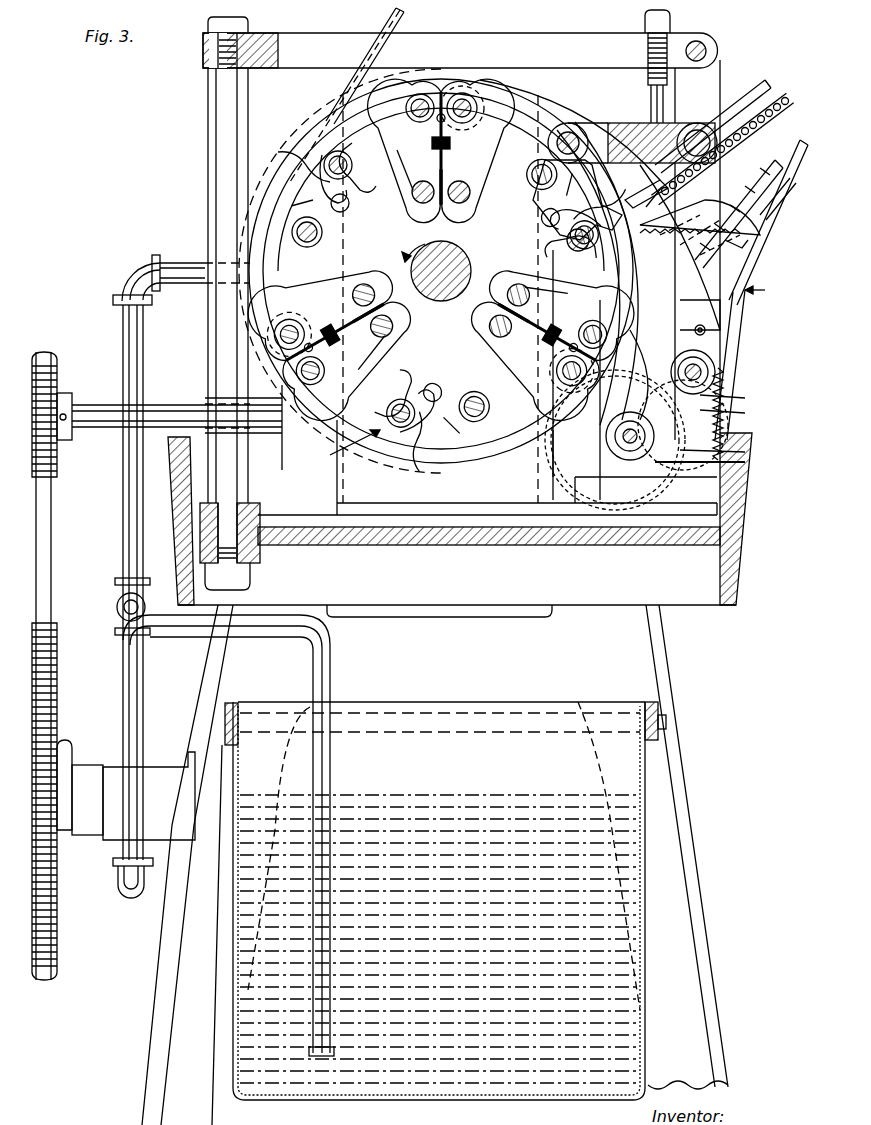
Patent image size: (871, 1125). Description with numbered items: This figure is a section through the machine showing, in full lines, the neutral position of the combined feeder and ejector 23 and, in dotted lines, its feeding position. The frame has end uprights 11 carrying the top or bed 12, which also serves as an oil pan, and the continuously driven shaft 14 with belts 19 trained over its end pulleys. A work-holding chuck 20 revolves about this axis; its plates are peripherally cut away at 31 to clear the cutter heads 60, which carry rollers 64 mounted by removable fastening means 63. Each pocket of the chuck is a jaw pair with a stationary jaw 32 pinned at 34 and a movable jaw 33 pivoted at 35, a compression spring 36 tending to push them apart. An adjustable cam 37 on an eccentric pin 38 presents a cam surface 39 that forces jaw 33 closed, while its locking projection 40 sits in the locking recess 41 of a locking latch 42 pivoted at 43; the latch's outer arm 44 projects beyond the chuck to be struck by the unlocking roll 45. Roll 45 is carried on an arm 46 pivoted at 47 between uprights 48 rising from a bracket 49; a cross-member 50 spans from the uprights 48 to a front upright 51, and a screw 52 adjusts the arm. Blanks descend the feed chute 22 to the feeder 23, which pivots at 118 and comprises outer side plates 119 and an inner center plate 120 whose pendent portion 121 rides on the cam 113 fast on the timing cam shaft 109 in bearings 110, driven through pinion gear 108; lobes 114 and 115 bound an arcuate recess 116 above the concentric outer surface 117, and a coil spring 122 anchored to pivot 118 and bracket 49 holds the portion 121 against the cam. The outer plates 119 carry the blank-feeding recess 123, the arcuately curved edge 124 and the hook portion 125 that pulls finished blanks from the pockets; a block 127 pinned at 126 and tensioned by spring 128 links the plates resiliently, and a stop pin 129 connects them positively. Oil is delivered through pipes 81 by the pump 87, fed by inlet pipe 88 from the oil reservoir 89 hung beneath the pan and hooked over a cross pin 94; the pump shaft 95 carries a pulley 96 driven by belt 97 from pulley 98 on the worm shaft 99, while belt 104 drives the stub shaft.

The end uprights 11 is at (165, 991).
The top or bed 12 is at (738, 552).
The shaft 14 is at (450, 255).
The belts 19 is at (335, 96).
The work-holding chuck 20 is at (436, 286).
The magazine or feed chute 22 is at (770, 118).
The combined feeder and ejector 23 is at (751, 360).
The peripheral cut-away 31 is at (534, 110).
The stationary jaw 32 is at (548, 118).
The movable jaw 33 is at (400, 124).
The pin 34 is at (478, 192).
The pivot 35 is at (416, 200).
The compression spring 36 is at (452, 162).
The adjustable cam 37 is at (365, 182).
The eccentric pin 38 is at (346, 162).
The cam surface 39 is at (390, 166).
The locking projection 40 is at (324, 158).
The locking recess 41 is at (345, 208).
The locking latch 42 is at (292, 206).
The pivot 43 is at (292, 236).
The outer arm 44 is at (288, 153).
The unlocking roll 45 is at (574, 132).
The arm 46 is at (632, 124).
The pivot 47 is at (702, 130).
The uprights 48 is at (718, 78).
The bracket 49 is at (742, 492).
The cross-member 50 is at (487, 38).
The upright 51 is at (215, 116).
The screw 52 is at (647, 16).
The cutter heads 60 is at (410, 84).
The removable fastening means 63 is at (478, 106).
The rollers 64 is at (452, 92).
The pipes 81 is at (190, 262).
The pump 87 is at (160, 778).
The inlet pipe 88 is at (330, 777).
The oil reservoir 89 is at (343, 1102).
The cross pin 94 is at (668, 716).
The shaft 95 is at (84, 786).
The pulley 96 is at (58, 652).
The belt 97 is at (45, 565).
The pulley 98 is at (58, 372).
The worm shaft 99 is at (168, 408).
The belt 104 is at (752, 82).
The pinion gear 108 is at (684, 503).
The timing cam shaft 109 is at (738, 414).
The bearings 110 is at (723, 465).
The cam 113 is at (545, 478).
The lobe 114 is at (738, 398).
The lobe 115 is at (614, 434).
The arcuate recess 116 is at (642, 350).
The outer surface 117 is at (608, 503).
The pivot 118 is at (716, 370).
The outer side plates 119 is at (728, 313).
The inner center plate 120 is at (597, 311).
The cam engaging lower portion 121 is at (735, 450).
The coil spring 122 is at (724, 376).
The blank-feeding recess 123 is at (644, 194).
The arcuately curved edge 124 is at (740, 206).
The hook portion 125 is at (577, 205).
The pin 126 is at (742, 252).
The block 127 is at (770, 248).
The spring 128 is at (700, 227).
The stop pin 129 is at (706, 331).